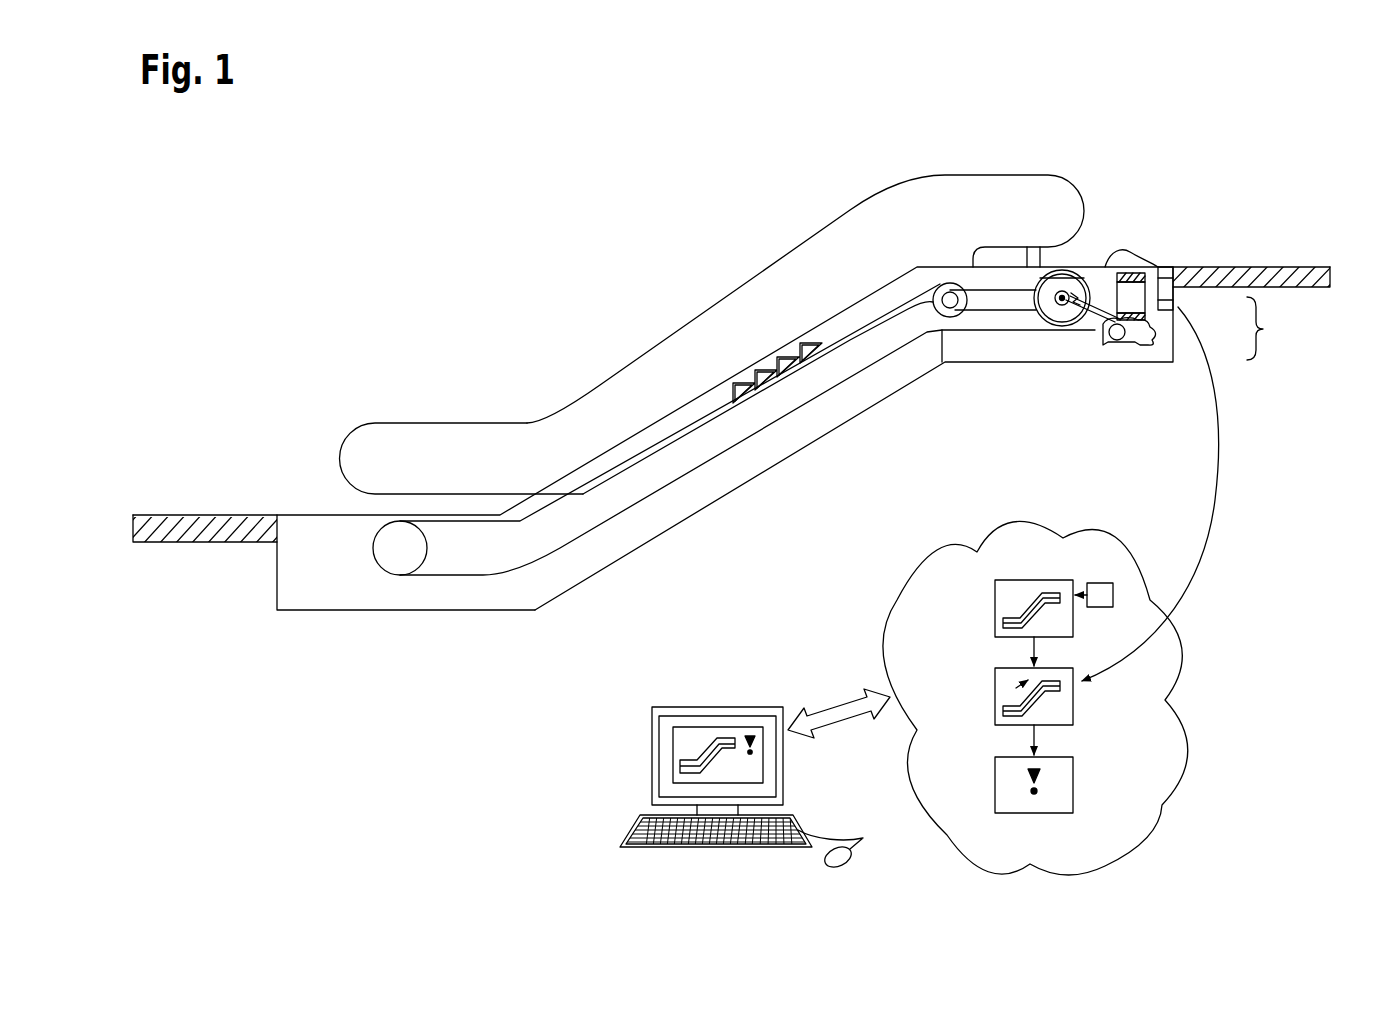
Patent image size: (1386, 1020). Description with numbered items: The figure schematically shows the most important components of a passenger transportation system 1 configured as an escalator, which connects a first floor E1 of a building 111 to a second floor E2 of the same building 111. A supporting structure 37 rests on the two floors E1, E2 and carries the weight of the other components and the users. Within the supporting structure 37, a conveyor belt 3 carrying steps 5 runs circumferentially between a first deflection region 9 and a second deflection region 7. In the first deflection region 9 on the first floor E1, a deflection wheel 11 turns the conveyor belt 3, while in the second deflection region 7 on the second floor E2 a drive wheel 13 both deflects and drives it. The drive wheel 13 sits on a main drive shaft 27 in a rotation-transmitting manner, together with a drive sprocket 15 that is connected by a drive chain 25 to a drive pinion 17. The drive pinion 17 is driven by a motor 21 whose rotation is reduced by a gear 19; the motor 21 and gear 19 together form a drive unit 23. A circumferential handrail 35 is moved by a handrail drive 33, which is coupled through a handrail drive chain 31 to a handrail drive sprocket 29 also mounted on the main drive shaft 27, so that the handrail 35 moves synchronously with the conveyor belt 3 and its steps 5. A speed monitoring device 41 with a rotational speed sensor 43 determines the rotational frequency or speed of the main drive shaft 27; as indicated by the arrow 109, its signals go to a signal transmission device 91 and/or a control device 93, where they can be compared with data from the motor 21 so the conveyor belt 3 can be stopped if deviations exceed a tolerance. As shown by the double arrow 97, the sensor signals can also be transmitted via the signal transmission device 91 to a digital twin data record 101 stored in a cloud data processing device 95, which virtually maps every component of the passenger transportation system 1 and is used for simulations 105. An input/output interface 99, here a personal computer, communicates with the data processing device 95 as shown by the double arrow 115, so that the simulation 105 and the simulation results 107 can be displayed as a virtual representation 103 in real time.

The passenger transportation system 1 is at (585, 245).
The conveyor belt 3 is at (690, 468).
The steps 5 is at (743, 373).
The second deflection region 7 is at (1101, 260).
The first deflection region 9 is at (343, 493).
The deflection wheel 11 is at (372, 550).
The drive wheel 13 is at (1003, 265).
The drive sprocket 15 is at (1040, 312).
The drive pinion 17 is at (1108, 336).
The gear 19 is at (1157, 335).
The motor 21 is at (1150, 296).
The drive unit 23 is at (1275, 328).
The drive chain 25 is at (1096, 314).
The main drive shaft 27 is at (1027, 247).
The handrail drive sprocket 29 is at (1067, 318).
The handrail drive chain 31 is at (990, 314).
The handrail drive 33 is at (943, 338).
The handrail 35 is at (1040, 247).
The supporting structure 37 is at (782, 462).
The speed monitoring device 41 is at (1076, 286).
The rotational speed sensor 43 is at (1066, 276).
The signal transmission device 91 is at (1167, 275).
The control device 93 is at (1165, 265).
The data processing device 95 is at (1008, 856).
The double arrow 97 is at (1218, 408).
The input/output interface 99 is at (648, 766).
The digital twin data record 101 is at (995, 614).
The virtual representation 103 is at (705, 735).
The simulations 105 is at (1073, 710).
The simulation results 107 is at (1073, 770).
The arrow 109 is at (1137, 253).
The building 111 is at (1113, 597).
The double arrow 115 is at (830, 706).
The first floor E1 is at (180, 528).
The second floor E2 is at (1297, 275).